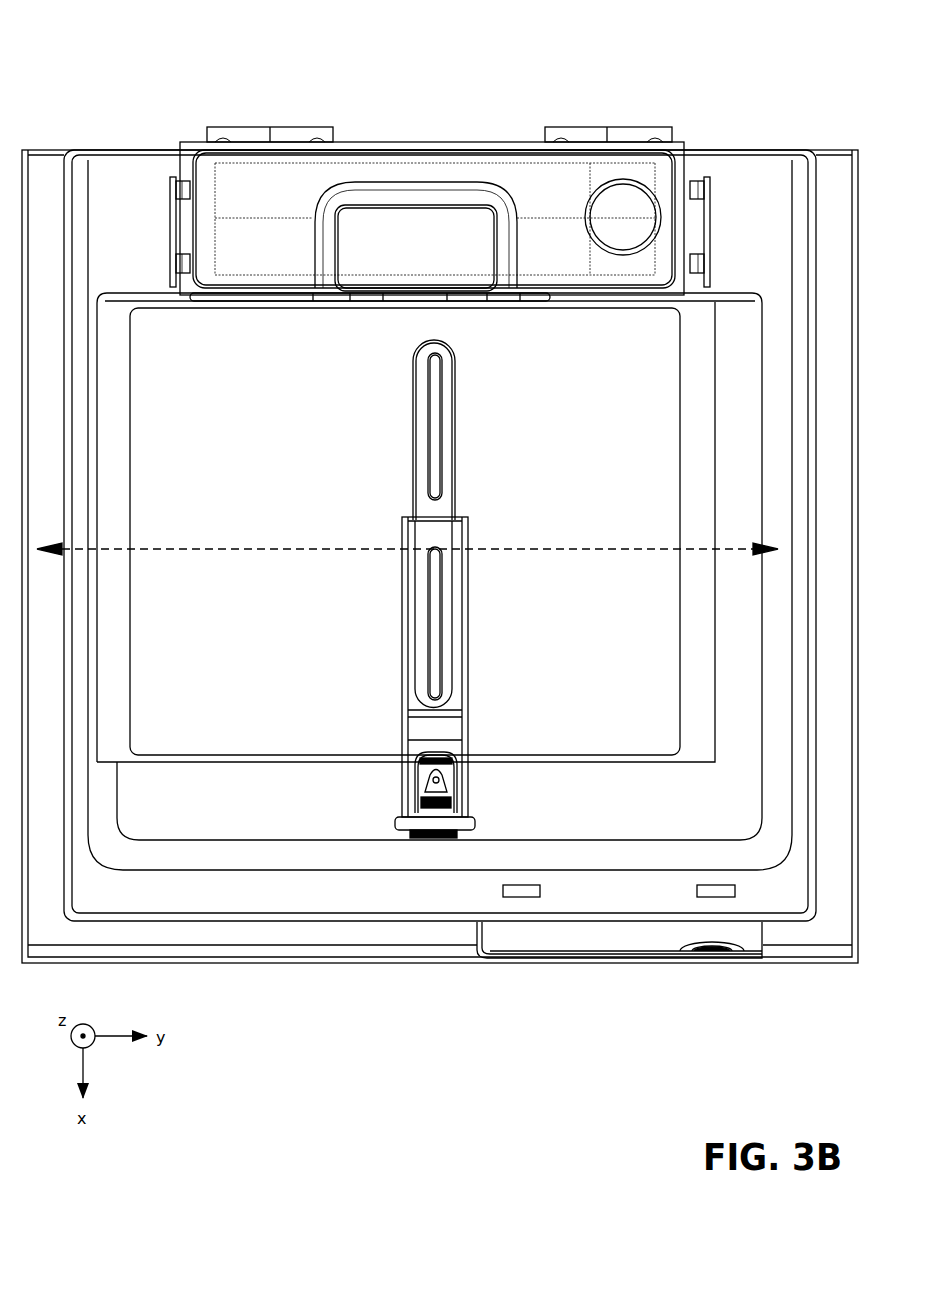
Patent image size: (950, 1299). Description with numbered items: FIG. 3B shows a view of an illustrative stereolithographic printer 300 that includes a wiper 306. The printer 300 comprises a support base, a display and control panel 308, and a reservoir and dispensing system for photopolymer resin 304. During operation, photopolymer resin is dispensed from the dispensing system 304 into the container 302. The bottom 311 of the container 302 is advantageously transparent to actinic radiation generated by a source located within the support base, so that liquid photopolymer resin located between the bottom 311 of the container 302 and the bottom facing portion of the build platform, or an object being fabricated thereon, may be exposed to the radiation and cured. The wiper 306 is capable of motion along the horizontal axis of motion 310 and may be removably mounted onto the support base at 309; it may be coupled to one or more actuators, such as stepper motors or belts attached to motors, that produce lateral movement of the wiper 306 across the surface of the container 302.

The stereolithographic printer 300 is at (98, 40).
The container 302 is at (713, 306).
The reservoir and dispensing system for photopolymer resin 304 is at (650, 171).
The wiper 306 is at (447, 496).
The display and control panel 308 is at (605, 926).
The wiper mounting location 309 is at (410, 840).
The horizontal axis of motion 310 is at (237, 552).
The bottom of the container 311 is at (405, 531).